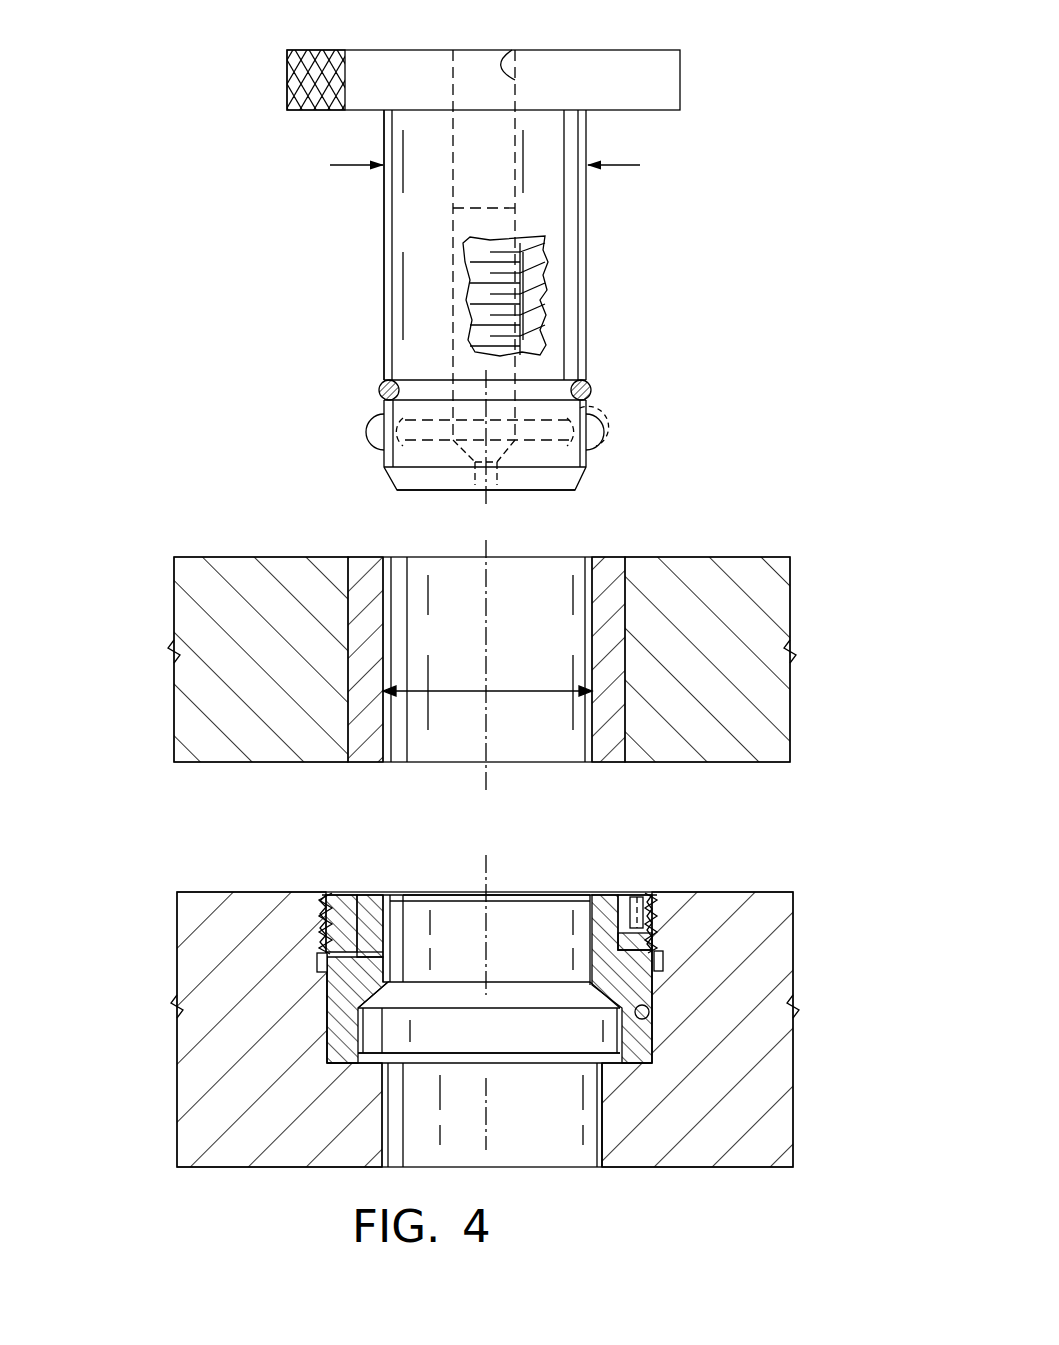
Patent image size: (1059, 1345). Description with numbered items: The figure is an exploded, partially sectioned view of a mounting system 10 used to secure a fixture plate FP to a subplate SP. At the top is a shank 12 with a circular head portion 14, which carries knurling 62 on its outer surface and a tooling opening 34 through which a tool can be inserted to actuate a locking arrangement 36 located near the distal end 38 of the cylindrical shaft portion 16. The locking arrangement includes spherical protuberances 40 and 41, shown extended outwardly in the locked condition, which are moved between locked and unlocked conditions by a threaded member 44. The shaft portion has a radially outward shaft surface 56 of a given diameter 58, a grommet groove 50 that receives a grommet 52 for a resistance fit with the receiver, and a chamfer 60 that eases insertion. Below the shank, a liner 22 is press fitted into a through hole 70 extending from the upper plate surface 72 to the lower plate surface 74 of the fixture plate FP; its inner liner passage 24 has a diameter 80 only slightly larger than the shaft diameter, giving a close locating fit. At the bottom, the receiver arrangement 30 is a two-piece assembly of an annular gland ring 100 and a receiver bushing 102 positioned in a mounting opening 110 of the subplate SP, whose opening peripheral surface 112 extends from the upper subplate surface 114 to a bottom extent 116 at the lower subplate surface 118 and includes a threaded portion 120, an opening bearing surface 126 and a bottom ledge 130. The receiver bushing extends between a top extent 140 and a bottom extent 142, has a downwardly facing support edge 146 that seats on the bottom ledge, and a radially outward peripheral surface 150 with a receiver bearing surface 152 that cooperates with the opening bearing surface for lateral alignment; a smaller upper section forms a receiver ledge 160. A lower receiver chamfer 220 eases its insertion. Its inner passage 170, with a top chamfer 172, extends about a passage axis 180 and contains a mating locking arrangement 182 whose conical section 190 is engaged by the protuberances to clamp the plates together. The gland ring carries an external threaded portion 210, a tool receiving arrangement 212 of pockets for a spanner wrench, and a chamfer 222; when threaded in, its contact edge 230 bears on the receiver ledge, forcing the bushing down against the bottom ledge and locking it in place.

The mounting system 10 is at (192, 62).
The shank 12 is at (628, 217).
The head portion 14 is at (680, 84).
The shaft portion 16 is at (587, 266).
The liner 22 is at (608, 560).
The inner liner passage 24 is at (392, 566).
The receiver arrangement 30 is at (601, 878).
The tooling opening 34 is at (516, 46).
The locking arrangement 36 is at (606, 432).
The distal end 38 is at (438, 492).
The protuberance 40 is at (370, 428).
The protuberance 41 is at (612, 420).
The threaded member 44 is at (505, 305).
The grommet groove 50 is at (538, 392).
The grommet 52 is at (386, 386).
The shaft surface 56 is at (384, 238).
The diameter 58 is at (338, 160).
The chamfer 60 is at (585, 485).
The knurling 62 is at (302, 77).
The through hole 70 is at (350, 740).
The upper plate surface 72 is at (238, 555).
The lower plate surface 74 is at (226, 764).
The diameter 80 is at (507, 689).
The fixture plate FP is at (491, 645).
The subplate SP is at (478, 1006).
The annular gland ring 100 is at (340, 895).
The receiver bushing 102 is at (382, 892).
The mounting opening 110 is at (656, 895).
The opening peripheral surface 112 is at (658, 1002).
The upper subplate surface 114 is at (210, 890).
The bottom extent 116 is at (548, 1168).
The lower subplate surface 118 is at (686, 1167).
The threaded portion 120 is at (323, 905).
The opening bearing surface 126 is at (648, 1010).
The bottom ledge 130 is at (585, 1060).
The top extent 140 is at (377, 892).
The bottom extent 142 is at (637, 1068).
The support edge 146 is at (345, 1066).
The peripheral surface 150 is at (328, 1003).
The receiver bearing surface 152 is at (326, 1024).
The receiver ledge 160 is at (666, 960).
The inner passage 170 is at (592, 945).
The top chamfer 172 is at (592, 893).
The passage axis 180 is at (480, 862).
The mating locking arrangement 182 is at (590, 1012).
The conical section 190 is at (590, 986).
The threaded portion 210 is at (666, 902).
The tool receiving arrangement 212 is at (645, 890).
The lower receiver chamfer 220 is at (338, 1064).
The chamfer 222 is at (335, 958).
The contact edge 230 is at (320, 966).